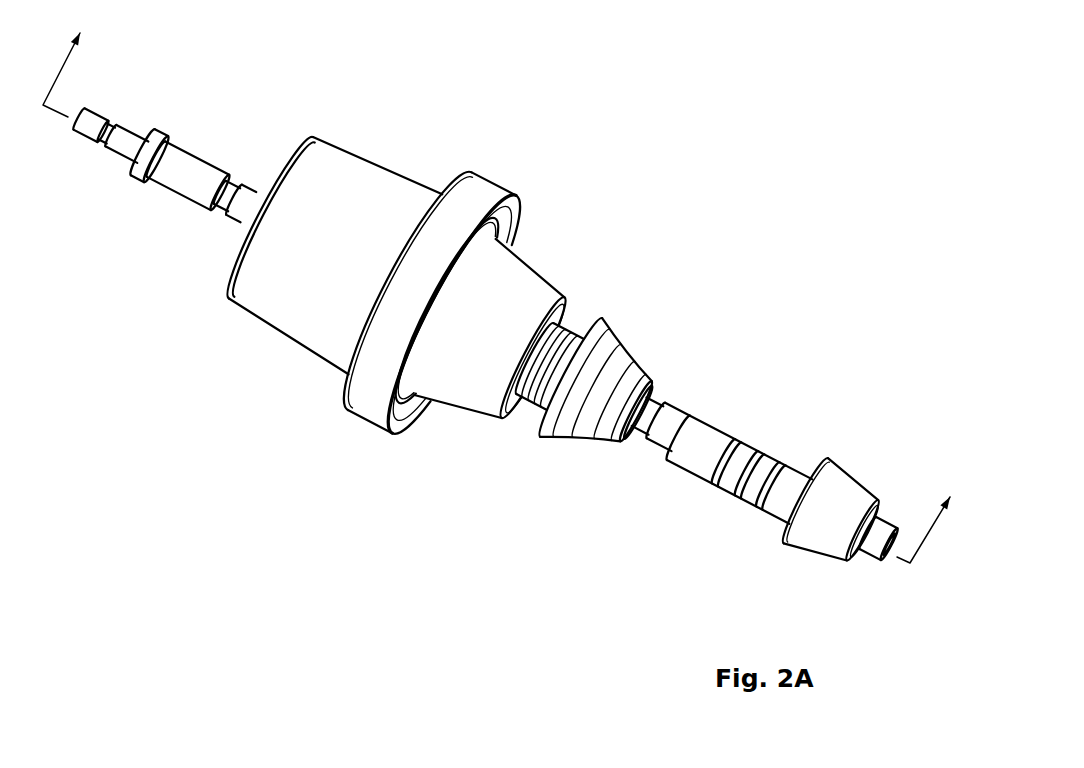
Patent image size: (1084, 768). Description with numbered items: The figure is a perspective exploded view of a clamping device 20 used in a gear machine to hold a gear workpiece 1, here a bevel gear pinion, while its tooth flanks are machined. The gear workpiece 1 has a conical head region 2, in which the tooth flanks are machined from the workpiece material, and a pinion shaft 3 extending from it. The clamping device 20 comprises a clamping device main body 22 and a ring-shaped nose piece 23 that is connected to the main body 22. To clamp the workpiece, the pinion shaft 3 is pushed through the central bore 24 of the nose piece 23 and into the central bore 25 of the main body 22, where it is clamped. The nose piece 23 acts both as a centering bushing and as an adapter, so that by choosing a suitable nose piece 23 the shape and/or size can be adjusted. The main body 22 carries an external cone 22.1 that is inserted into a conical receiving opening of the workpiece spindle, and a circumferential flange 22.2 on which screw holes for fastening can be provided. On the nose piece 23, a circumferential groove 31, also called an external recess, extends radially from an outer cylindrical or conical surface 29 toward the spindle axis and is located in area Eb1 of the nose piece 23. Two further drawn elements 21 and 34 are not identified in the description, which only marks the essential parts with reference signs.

The clamping device 20 is at (500, 323).
The plunger rod 21 is at (163, 176).
The clamping device main body 22 is at (429, 297).
The external cone 22.1 is at (383, 150).
The circumferential flange 22.2 is at (497, 183).
The tubular outlet 34 is at (472, 388).
The central bore of the main body 25 is at (564, 405).
The nose piece 23 is at (648, 423).
The outer cylindrical or conical surface 29 is at (576, 443).
The circumferential groove 31 is at (604, 443).
The central bore of the nose piece 24 is at (642, 443).
The area of the nose piece Eb1 is at (665, 388).
The pinion shaft 3 is at (735, 427).
The conical head region 2 is at (849, 515).
The gear workpiece 1 is at (850, 465).